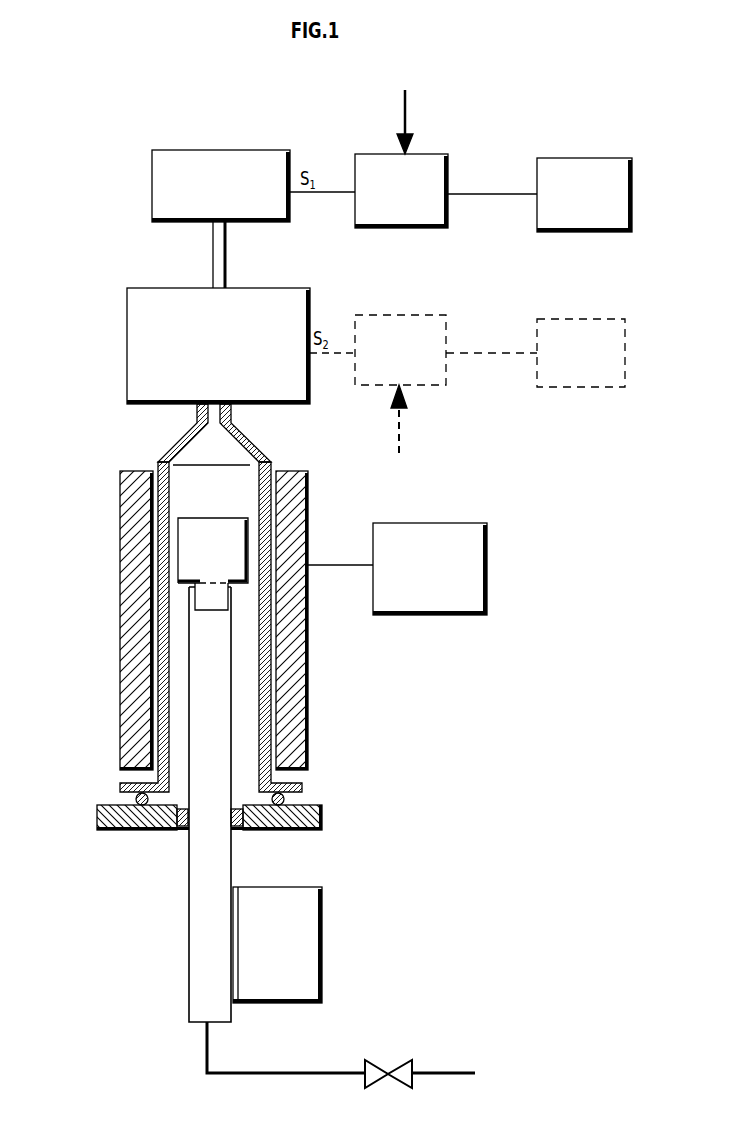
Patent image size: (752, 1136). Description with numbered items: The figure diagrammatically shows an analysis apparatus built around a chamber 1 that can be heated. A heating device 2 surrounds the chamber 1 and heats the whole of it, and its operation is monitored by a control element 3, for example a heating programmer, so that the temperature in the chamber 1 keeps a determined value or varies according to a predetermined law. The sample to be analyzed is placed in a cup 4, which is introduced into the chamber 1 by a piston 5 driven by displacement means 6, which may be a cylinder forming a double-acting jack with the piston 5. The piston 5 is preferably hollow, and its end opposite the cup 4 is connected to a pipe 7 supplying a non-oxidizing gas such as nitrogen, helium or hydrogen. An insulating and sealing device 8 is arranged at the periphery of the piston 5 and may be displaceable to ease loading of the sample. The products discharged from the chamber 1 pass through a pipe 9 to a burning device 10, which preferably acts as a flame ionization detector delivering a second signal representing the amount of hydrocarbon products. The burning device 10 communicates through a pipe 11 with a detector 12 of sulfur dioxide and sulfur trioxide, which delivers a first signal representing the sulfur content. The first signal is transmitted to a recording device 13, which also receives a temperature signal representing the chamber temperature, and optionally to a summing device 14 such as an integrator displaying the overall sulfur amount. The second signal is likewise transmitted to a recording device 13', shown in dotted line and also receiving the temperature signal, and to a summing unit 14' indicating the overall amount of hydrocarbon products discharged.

The chamber 1 is at (160, 601).
The heating device 2 is at (120, 488).
The control element 3 is at (405, 615).
The cup 4 is at (200, 541).
The piston 5 is at (189, 903).
The displacement means 6 is at (322, 929).
The pipe 7 is at (203, 1045).
The insulating and sealing device 8 is at (97, 820).
The pipe 9 is at (210, 417).
The burning device 10 is at (127, 348).
The pipe 11 is at (213, 259).
The detector 12 is at (152, 190).
The recording device 13 is at (417, 159).
The summing device 14 is at (584, 173).
The recording device 13' is at (413, 364).
The summing unit 14' is at (581, 331).